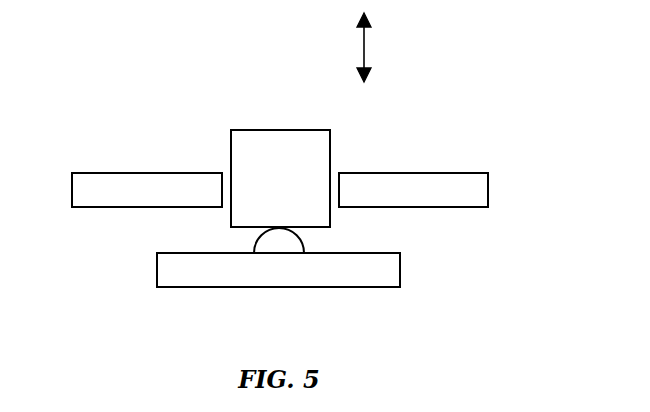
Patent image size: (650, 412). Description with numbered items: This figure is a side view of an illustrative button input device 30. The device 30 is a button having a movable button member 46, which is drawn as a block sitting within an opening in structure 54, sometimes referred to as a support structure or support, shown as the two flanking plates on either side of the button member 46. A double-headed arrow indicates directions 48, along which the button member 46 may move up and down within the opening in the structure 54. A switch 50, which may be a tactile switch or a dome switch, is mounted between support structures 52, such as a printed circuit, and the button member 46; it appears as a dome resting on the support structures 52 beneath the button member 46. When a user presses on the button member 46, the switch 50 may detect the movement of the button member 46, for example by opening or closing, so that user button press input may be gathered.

The device 30 is at (427, 138).
The movable button member 46 is at (280, 136).
The directions 48 is at (364, 45).
The switch 50 is at (302, 236).
The support structures 52 is at (279, 288).
The structure 54 is at (140, 182).